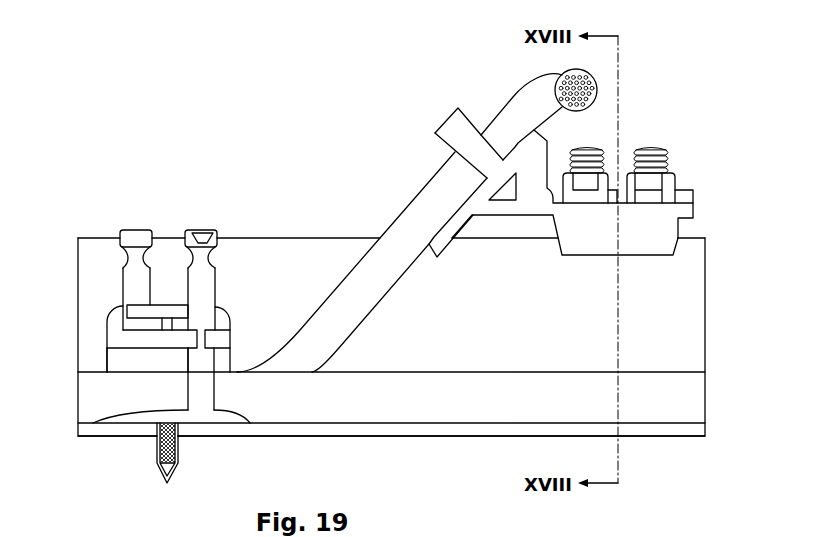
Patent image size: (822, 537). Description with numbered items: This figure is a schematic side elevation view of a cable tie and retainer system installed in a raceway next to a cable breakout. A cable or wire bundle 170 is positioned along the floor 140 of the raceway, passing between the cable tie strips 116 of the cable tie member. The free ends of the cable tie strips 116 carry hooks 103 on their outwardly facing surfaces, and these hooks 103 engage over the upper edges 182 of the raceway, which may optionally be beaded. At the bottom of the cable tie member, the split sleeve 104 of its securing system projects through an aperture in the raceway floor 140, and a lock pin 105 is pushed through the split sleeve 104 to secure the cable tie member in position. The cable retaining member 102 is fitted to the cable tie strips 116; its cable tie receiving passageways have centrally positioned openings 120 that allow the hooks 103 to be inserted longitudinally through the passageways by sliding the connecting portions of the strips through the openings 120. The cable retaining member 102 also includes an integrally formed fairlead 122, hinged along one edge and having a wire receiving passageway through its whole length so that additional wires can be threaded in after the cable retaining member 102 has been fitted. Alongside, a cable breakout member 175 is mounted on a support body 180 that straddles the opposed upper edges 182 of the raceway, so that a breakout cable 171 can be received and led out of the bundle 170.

The cable retaining member 102 is at (113, 327).
The hooks 103 is at (138, 237).
The split sleeve 104 is at (180, 462).
The lock pin 105 is at (160, 470).
The cable tie strips 116 is at (208, 287).
The openings 120 is at (203, 340).
The fairlead 122 is at (125, 362).
The floor 140 is at (430, 437).
The cable or wire bundle 170 is at (705, 418).
The breakout cable 171 is at (540, 97).
The cable breakout member 175 is at (462, 197).
The support body 180 is at (648, 190).
The upper edges 182 is at (340, 238).